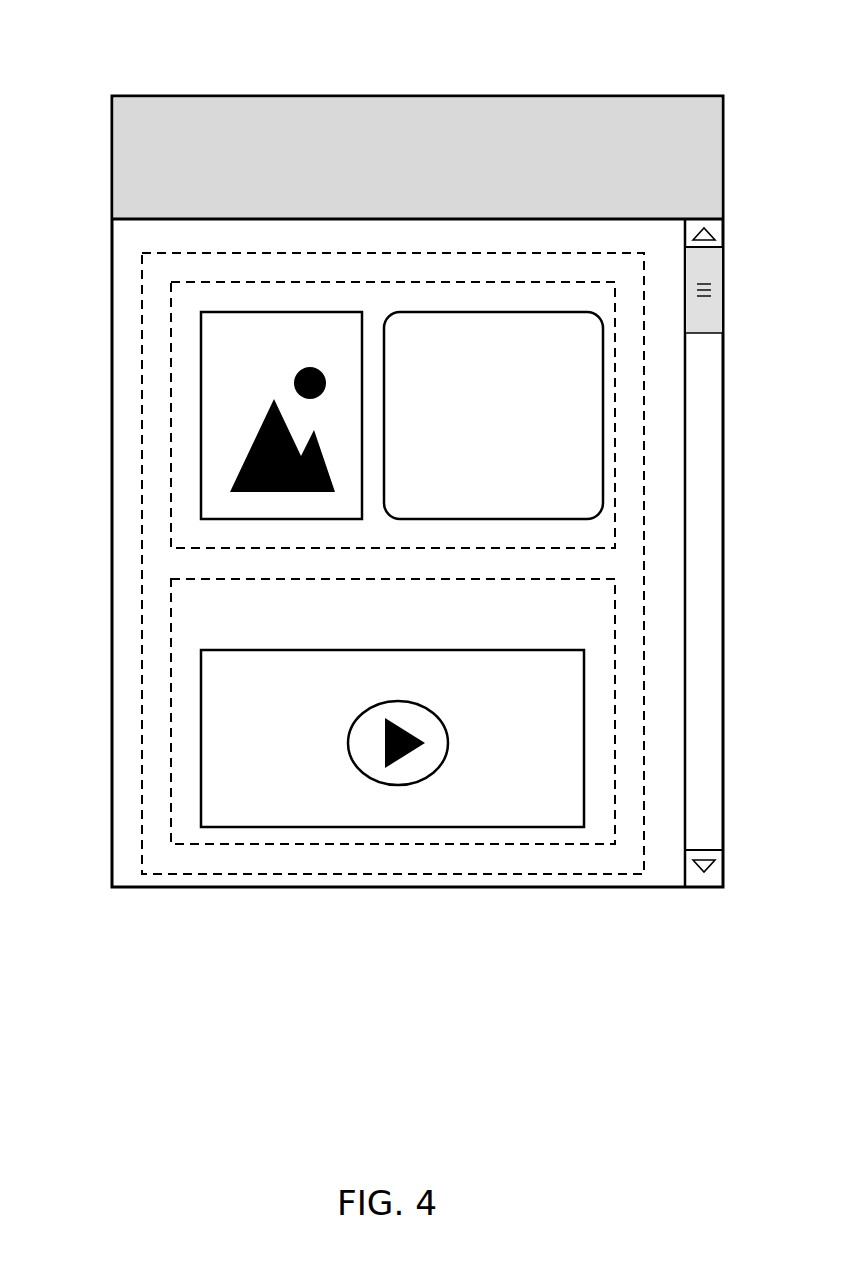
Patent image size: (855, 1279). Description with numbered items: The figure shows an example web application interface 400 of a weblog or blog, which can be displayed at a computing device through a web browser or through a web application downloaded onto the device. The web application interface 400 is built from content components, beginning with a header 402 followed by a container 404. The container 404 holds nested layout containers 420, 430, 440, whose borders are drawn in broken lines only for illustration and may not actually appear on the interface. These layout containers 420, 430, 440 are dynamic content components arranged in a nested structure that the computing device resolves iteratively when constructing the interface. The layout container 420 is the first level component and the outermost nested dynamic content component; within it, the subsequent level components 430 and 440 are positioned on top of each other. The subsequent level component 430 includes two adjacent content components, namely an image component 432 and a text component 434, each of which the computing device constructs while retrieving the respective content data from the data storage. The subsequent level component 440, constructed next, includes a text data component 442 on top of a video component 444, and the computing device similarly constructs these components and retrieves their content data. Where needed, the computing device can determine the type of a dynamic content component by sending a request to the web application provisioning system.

The web application interface 400 is at (666, 30).
The header 402 is at (112, 150).
The container 404 is at (136, 240).
The layout container 420 is at (142, 288).
The layout container 430 is at (171, 323).
The image component 432 is at (201, 365).
The text component 434 is at (603, 501).
The layout container 440 is at (171, 596).
The text data component 442 is at (197, 618).
The video component 444 is at (201, 713).